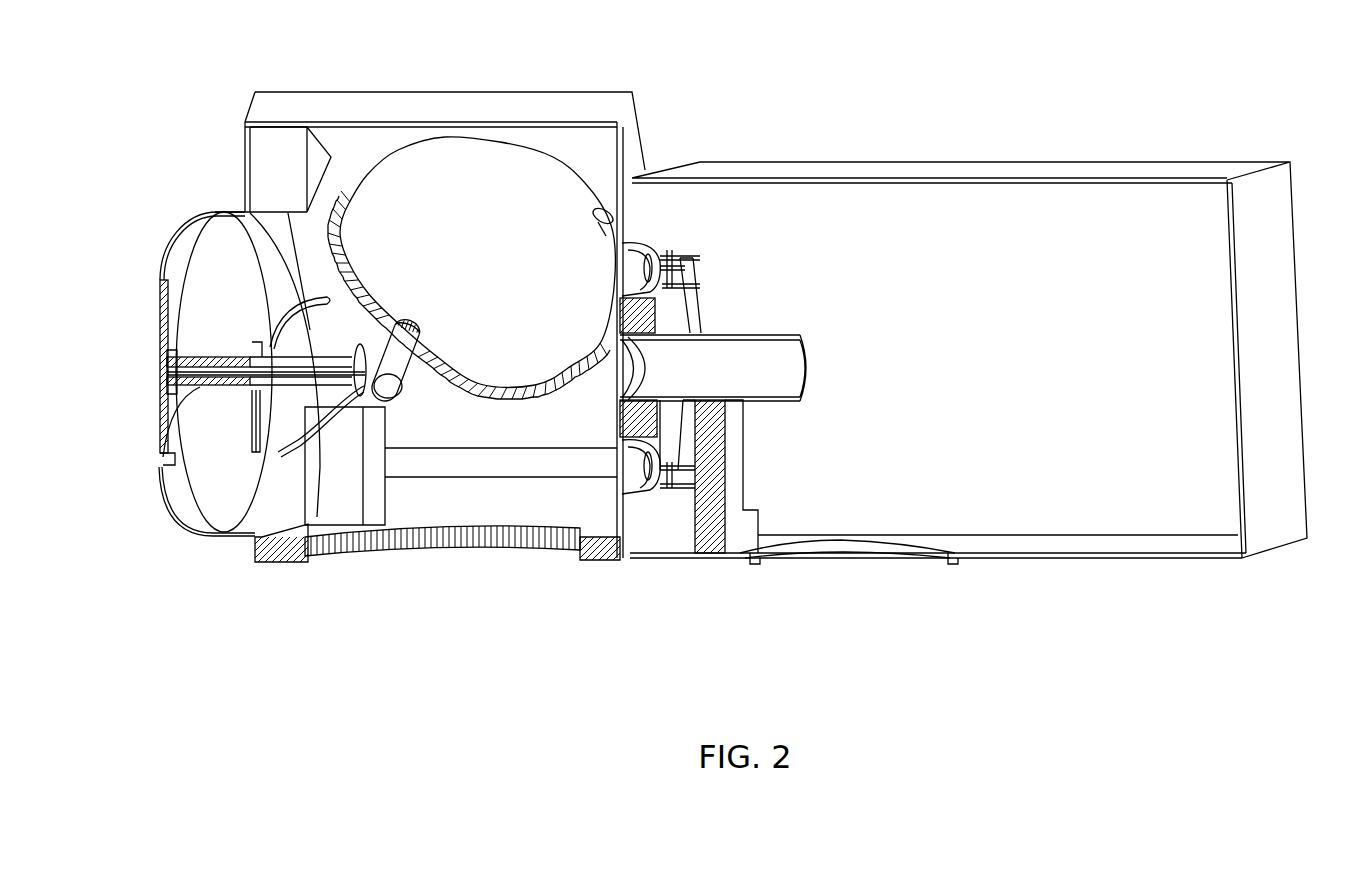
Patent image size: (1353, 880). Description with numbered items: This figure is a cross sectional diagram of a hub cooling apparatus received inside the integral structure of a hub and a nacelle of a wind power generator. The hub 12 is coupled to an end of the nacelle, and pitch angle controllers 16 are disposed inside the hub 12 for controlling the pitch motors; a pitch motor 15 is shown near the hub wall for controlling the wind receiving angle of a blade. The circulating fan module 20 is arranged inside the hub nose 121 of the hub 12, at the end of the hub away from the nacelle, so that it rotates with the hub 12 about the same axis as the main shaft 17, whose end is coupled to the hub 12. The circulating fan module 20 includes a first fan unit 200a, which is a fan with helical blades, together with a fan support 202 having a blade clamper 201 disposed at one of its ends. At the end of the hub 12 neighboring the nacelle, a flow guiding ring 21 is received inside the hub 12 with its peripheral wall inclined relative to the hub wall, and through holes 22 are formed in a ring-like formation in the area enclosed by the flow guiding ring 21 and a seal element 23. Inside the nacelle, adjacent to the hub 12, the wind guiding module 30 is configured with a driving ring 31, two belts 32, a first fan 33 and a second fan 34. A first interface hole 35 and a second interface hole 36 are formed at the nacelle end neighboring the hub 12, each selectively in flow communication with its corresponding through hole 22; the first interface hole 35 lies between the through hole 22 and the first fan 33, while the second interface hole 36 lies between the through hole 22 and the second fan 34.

The hub 12 is at (570, 98).
The pitch angle controller 16 is at (277, 148).
The hub nose 121 is at (178, 303).
The circulating fan module 20 is at (246, 424).
The fan support 202 is at (205, 382).
The first fan unit 200a is at (308, 437).
The blade clamper 201 is at (392, 398).
The pitch motor 15 is at (398, 352).
The flow guiding ring 21 is at (592, 213).
The seal element 23 is at (620, 205).
The through hole 22 is at (672, 255).
The first fan 33 is at (682, 272).
The first interface hole 35 is at (690, 292).
The belt 32 is at (695, 296).
The wind guiding module 30 is at (848, 368).
The main shaft 17 is at (790, 380).
The driving ring 31 is at (687, 337).
The second fan 34 is at (700, 480).
The second interface hole 36 is at (638, 492).